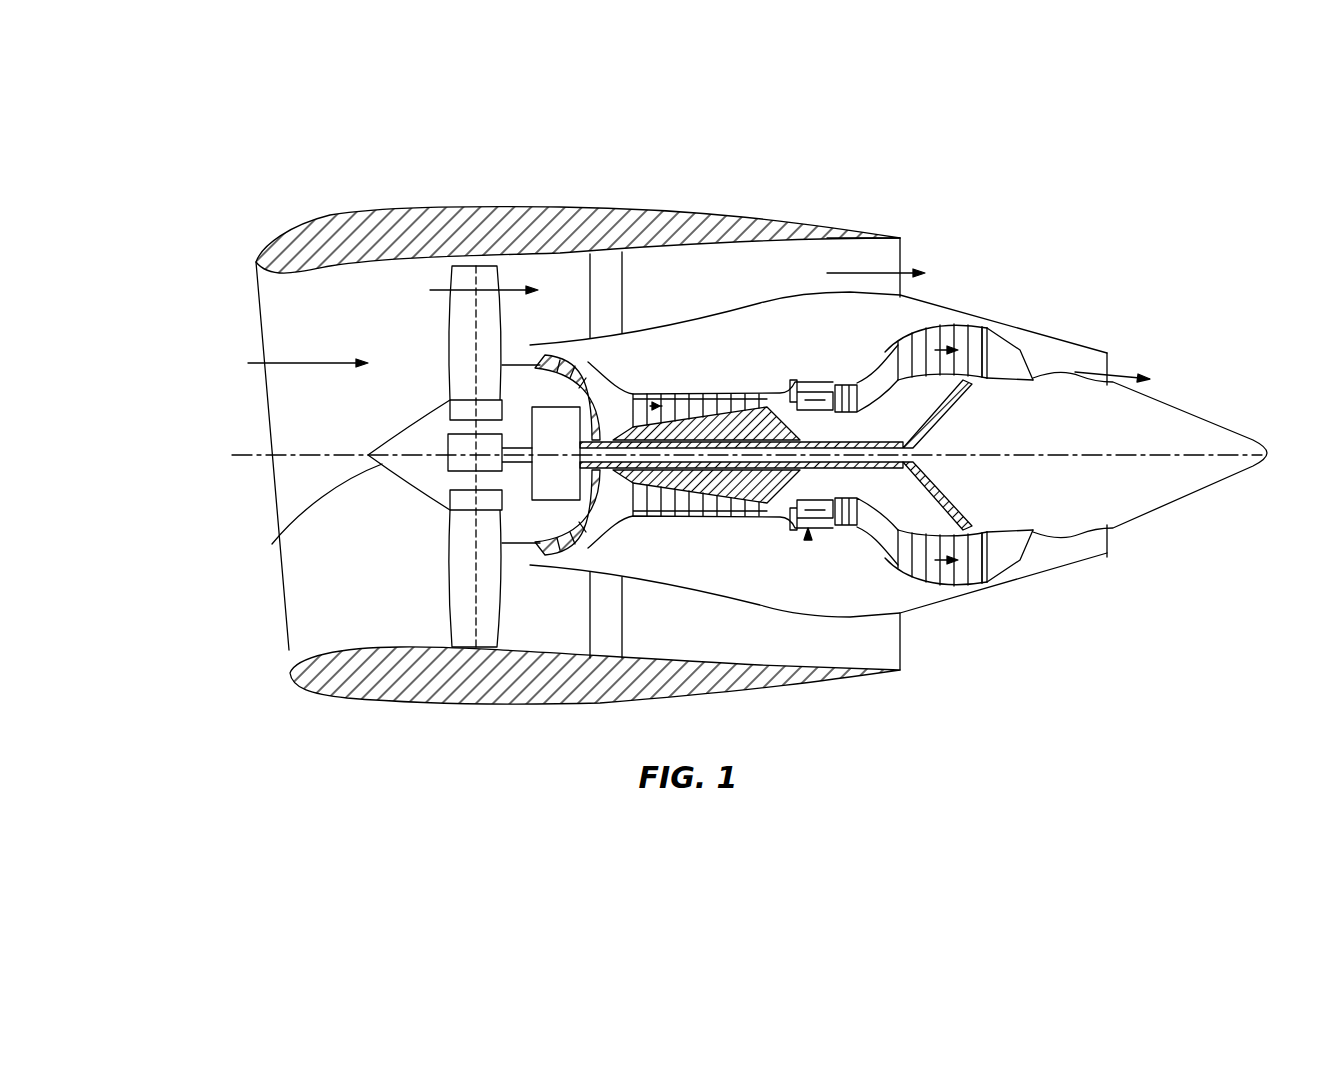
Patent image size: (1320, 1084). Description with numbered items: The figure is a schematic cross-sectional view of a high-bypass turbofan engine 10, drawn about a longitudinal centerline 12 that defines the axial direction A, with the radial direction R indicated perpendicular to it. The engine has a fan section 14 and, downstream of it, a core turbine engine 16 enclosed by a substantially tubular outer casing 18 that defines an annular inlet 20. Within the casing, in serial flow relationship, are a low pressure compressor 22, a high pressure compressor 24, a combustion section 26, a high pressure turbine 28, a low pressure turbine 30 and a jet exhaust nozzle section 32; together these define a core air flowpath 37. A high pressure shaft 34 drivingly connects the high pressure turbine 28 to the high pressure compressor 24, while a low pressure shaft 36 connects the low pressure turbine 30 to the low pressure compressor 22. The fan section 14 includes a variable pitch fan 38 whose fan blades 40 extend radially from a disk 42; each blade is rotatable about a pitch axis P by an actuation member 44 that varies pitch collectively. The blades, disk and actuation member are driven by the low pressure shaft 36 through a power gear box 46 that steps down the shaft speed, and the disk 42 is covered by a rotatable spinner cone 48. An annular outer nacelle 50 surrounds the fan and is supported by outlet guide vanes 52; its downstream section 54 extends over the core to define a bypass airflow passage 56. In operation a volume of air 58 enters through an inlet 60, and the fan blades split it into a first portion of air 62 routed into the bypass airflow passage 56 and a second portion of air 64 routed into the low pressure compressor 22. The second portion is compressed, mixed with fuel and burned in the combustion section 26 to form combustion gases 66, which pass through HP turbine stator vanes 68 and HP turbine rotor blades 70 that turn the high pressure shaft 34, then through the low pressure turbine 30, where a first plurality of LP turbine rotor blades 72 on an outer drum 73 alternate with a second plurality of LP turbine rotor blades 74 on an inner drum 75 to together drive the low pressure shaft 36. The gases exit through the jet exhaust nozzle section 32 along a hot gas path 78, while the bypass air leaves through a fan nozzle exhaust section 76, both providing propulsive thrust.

The turbofan engine 10 is at (1028, 219).
The longitudinal centerline 12 is at (1194, 452).
The fan section 14 is at (491, 181).
The core turbine engine 16 is at (780, 357).
The outer casing 18 is at (767, 606).
The annular inlet 20 is at (578, 552).
The low pressure compressor 22 is at (584, 513).
The high pressure compressor 24 is at (650, 511).
The combustion section 26 is at (806, 532).
The high pressure turbine 28 is at (912, 520).
The low pressure turbine 30 is at (973, 579).
The jet exhaust nozzle section 32 is at (1032, 556).
The high pressure shaft 34 is at (843, 410).
The low pressure shaft 36 is at (928, 421).
The core air flowpath 37 is at (612, 503).
The variable pitch fan 38 is at (422, 502).
The fan blades 40 is at (448, 594).
The disk 42 is at (462, 411).
The actuation member 44 is at (448, 438).
The power gear box 46 is at (548, 432).
The spinner cone 48 is at (272, 544).
The outer nacelle 50 is at (491, 704).
The outlet guide vanes 52 is at (624, 280).
The downstream section of the nacelle 54 is at (832, 227).
The bypass airflow passage 56 is at (713, 297).
The volume of air 58 is at (296, 362).
The inlet 60 is at (288, 653).
The first portion of air 62 is at (476, 283).
The second portion of air 64 is at (530, 352).
The combustion gases 66 is at (937, 331).
The HP turbine stator vanes 68 is at (822, 520).
The HP turbine rotor blades 70 is at (843, 507).
The first plurality of LP turbine rotor blades 72 is at (905, 554).
The outer drum 73 is at (975, 320).
The second plurality of LP turbine rotor blades 74 is at (918, 583).
The inner drum 75 is at (893, 522).
The fan nozzle exhaust section 76 is at (892, 262).
The hot gas path 78 is at (890, 366).
The pitch axis P is at (483, 272).
The radial direction R is at (140, 322).
The axial direction A is at (800, 860).